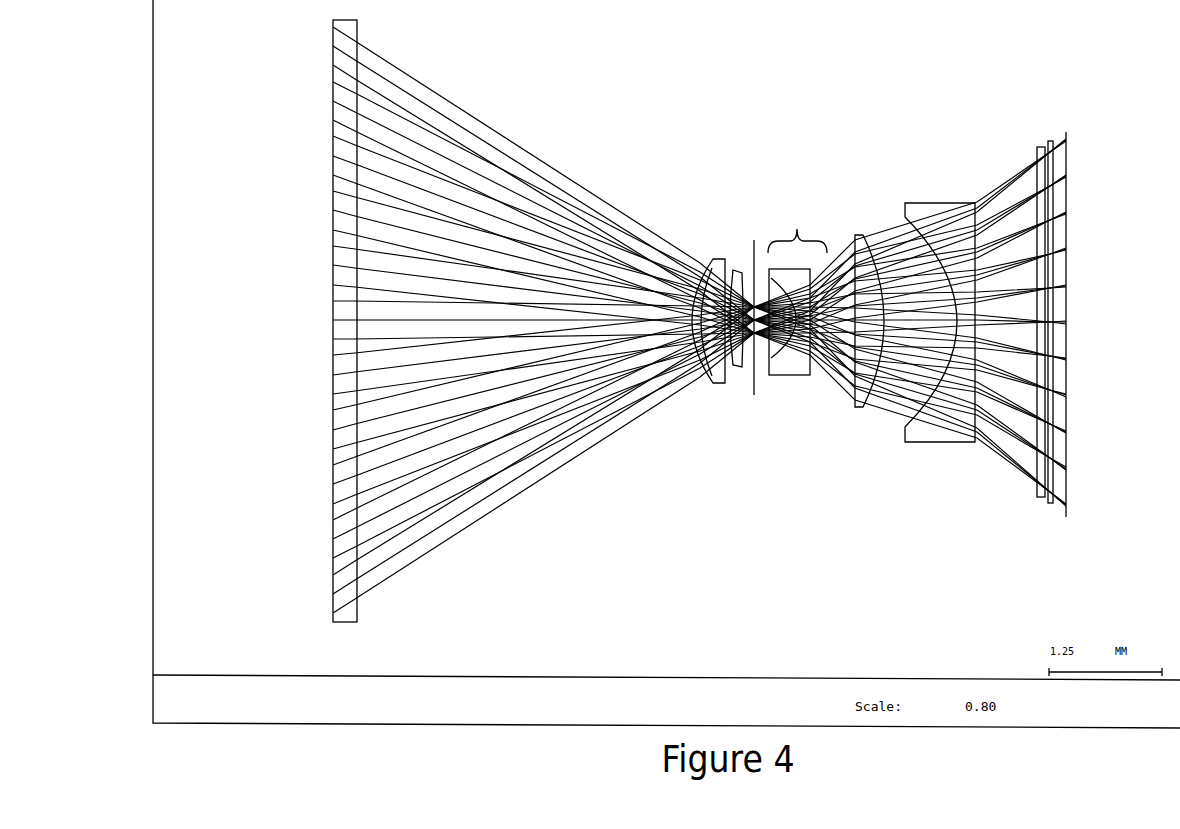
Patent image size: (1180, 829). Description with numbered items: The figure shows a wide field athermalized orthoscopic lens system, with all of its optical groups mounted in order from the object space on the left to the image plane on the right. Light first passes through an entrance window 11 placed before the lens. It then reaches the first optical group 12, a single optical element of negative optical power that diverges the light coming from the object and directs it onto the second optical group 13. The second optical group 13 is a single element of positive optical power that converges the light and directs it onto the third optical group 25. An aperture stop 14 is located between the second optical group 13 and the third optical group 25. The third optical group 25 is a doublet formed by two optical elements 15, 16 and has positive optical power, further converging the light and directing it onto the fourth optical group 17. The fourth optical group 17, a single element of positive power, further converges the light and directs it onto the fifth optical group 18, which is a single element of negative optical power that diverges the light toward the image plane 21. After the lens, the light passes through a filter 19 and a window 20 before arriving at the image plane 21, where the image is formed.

The entrance window 11 is at (345, 541).
The first optical group 12 is at (706, 270).
The second optical group 13 is at (738, 273).
The aperture stop 14 is at (753, 395).
The optical element 15 is at (783, 353).
The optical element 16 is at (801, 377).
The fourth optical group 17 is at (867, 263).
The fifth optical group 18 is at (943, 215).
The filter 19 is at (1039, 481).
The window 20 is at (1045, 506).
The image plane 21 is at (1074, 153).
The third optical group 25 is at (780, 228).